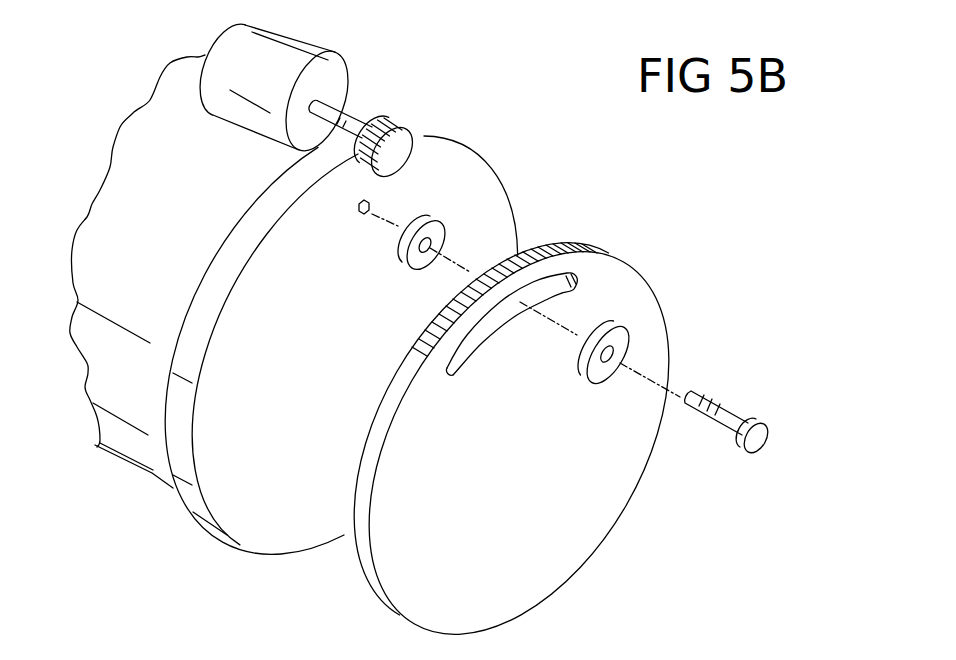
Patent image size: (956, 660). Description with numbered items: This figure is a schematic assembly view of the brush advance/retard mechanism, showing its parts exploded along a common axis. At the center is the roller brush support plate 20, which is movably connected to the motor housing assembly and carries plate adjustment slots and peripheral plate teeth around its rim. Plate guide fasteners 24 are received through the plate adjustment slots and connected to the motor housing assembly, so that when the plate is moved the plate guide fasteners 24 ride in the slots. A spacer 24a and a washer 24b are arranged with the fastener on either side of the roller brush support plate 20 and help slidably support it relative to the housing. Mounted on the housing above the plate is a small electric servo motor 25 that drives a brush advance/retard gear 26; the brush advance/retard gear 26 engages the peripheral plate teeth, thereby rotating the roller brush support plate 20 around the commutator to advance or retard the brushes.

The roller brush support plate 20 is at (627, 298).
The plate guide fasteners 24 is at (738, 452).
The spacer 24a is at (426, 217).
The washer 24b is at (626, 341).
The servo motor 25 is at (300, 54).
The brush advance/retard gear 26 is at (392, 126).